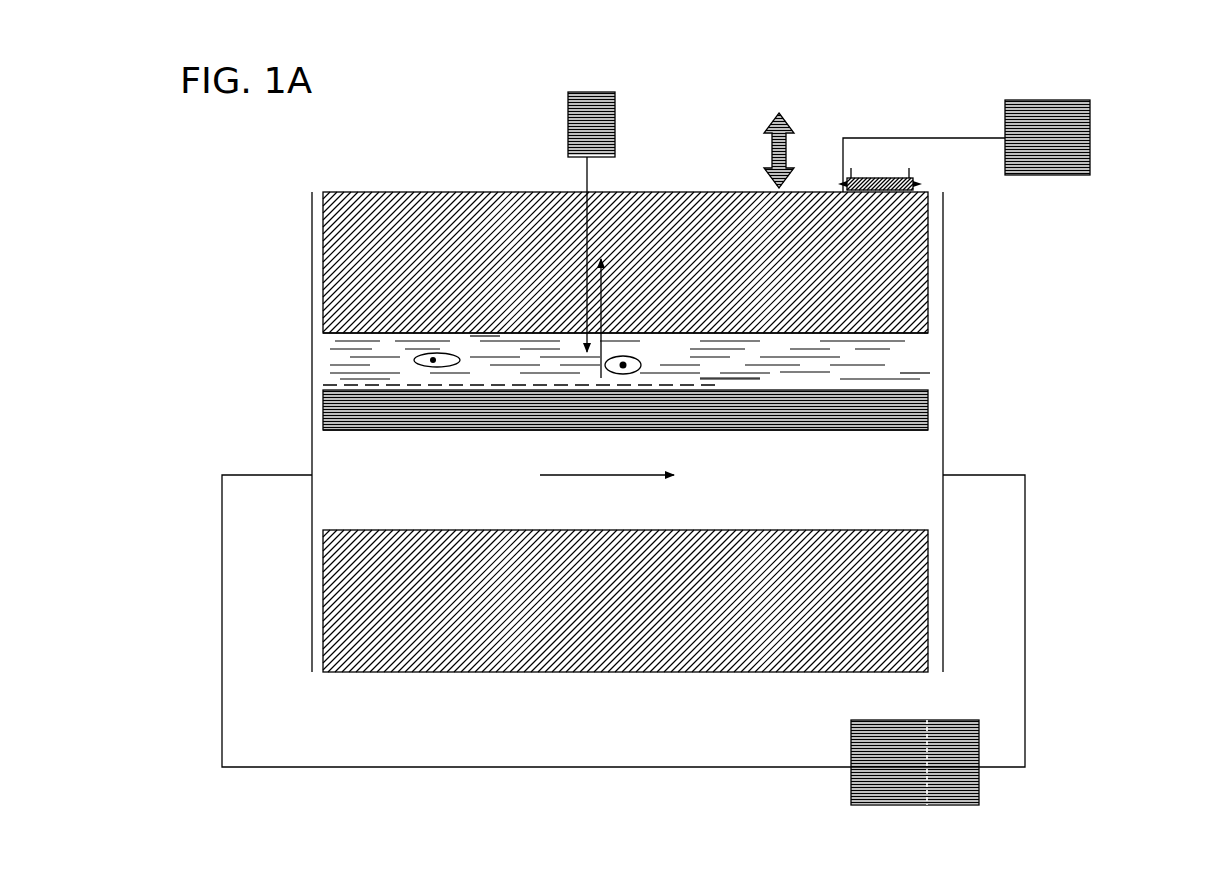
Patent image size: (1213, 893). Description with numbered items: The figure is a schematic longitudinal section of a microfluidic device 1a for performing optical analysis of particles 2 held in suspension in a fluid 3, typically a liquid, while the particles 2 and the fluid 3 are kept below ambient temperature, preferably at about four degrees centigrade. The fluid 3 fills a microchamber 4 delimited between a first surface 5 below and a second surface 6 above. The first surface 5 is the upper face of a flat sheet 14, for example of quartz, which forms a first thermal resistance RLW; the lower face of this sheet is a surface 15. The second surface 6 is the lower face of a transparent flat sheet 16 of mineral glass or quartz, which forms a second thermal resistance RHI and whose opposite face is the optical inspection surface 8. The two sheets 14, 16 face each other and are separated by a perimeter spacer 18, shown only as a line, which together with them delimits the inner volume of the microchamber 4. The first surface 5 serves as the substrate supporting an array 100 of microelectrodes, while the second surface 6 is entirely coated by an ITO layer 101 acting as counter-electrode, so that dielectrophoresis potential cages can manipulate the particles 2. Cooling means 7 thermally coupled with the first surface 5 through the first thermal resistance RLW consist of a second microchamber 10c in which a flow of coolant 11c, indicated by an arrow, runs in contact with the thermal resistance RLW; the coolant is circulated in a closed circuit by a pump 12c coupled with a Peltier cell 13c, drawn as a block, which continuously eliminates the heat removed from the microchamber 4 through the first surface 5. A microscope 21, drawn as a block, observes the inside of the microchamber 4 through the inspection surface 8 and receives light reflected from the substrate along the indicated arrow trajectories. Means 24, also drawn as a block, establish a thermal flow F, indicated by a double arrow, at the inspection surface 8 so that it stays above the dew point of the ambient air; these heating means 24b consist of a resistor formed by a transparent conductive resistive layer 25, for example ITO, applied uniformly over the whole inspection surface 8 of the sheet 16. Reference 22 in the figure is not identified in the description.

The device for performing optical analysis of particles 1a is at (1142, 106).
The particles 2 is at (431, 355).
The fluid 3 is at (905, 355).
The microchamber 4 is at (810, 378).
The first surface 5 is at (733, 385).
The second surface 6 is at (486, 344).
The cooling means 7 is at (1040, 566).
The thermal inspection surface 8 is at (625, 225).
The second microchamber 10c is at (419, 505).
The flow of coolant 11c is at (540, 475).
The pump 12c is at (923, 781).
The Peltier cell 13c is at (858, 778).
The flat sheet 14 is at (328, 412).
The surface 15 is at (786, 438).
The flat sheet 16 is at (357, 211).
The perimeter spacer 18 is at (950, 366).
The microscope 21 is at (572, 102).
The lower block / heat sink 22 is at (758, 672).
The means to establish a thermal flow 24 is at (995, 137).
The means to heat the optical inspection surface 24b is at (891, 136).
The transparent conductive resistive layer 25 is at (870, 176).
The array of microelectrodes 100 is at (416, 396).
The ITO layer 101 is at (422, 329).
The thermal flow F is at (765, 150).
The second thermal resistance RHI is at (669, 225).
The first thermal resistance RLW is at (622, 412).